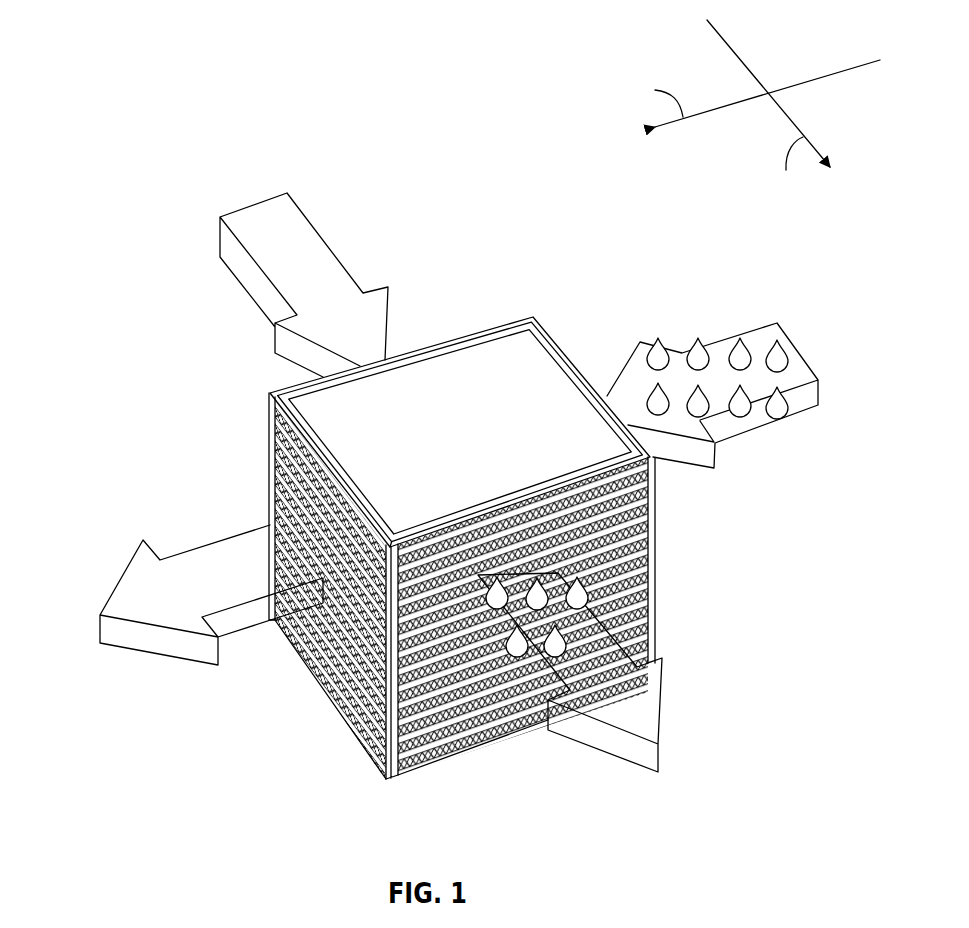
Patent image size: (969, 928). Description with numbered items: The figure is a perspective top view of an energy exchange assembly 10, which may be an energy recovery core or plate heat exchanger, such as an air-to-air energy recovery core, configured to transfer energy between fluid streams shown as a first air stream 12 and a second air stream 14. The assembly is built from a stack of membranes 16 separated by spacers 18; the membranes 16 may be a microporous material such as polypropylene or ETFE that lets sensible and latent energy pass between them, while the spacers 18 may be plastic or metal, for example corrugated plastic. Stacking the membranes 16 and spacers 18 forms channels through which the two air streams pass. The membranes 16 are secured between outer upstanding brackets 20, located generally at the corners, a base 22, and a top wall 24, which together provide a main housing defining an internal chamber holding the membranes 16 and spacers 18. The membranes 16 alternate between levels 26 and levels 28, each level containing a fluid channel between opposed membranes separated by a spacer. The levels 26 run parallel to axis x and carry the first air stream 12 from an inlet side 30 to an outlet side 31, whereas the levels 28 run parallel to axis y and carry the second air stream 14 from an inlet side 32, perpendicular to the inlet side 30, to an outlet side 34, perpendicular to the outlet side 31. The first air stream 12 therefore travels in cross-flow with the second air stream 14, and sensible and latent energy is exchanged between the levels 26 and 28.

The energy exchange assembly 10 is at (126, 304).
The first air stream 12 is at (313, 225).
The second air stream 14 is at (762, 323).
The membranes 16 is at (474, 617).
The spacers 18 is at (645, 492).
The outer upstanding brackets 20 is at (268, 398).
The base 22 is at (473, 549).
The top wall 24 is at (460, 398).
The levels 26 is at (533, 730).
The levels 28 is at (298, 665).
The inlet side 30 is at (413, 347).
The outlet side 31 is at (561, 646).
The inlet side 32 is at (570, 353).
The outlet side 34 is at (268, 470).